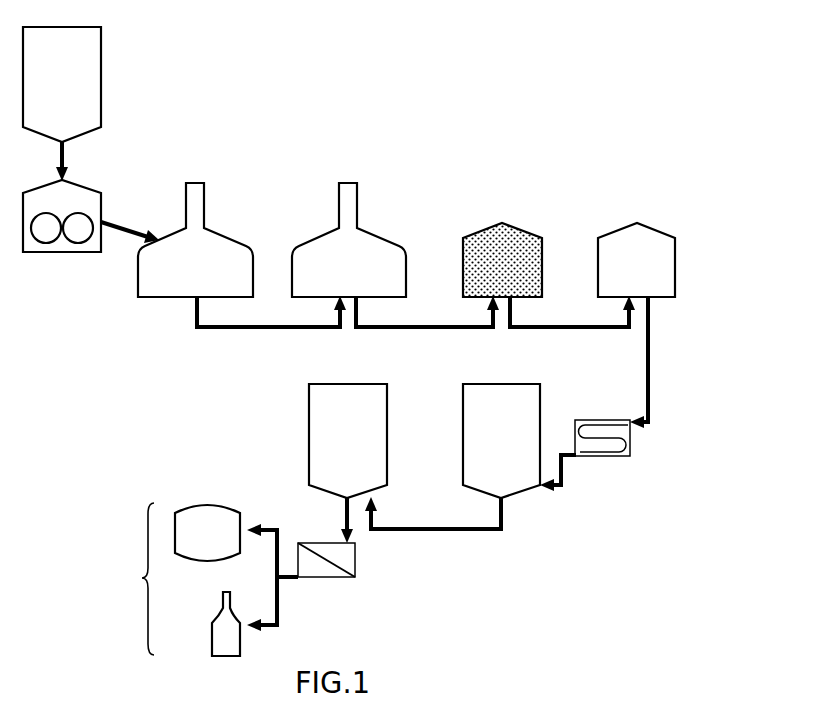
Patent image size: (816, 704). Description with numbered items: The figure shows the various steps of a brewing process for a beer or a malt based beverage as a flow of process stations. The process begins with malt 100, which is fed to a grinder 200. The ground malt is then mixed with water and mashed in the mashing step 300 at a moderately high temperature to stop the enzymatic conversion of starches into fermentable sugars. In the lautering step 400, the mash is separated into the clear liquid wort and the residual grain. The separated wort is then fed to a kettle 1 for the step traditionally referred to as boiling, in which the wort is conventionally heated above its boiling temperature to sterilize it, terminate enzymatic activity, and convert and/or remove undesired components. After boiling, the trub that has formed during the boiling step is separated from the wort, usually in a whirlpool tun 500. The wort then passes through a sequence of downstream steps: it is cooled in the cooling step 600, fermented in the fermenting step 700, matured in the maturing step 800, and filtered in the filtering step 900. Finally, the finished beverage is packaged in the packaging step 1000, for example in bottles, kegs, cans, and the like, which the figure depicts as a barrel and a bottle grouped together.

The malt 100 is at (98, 83).
The grinder 200 is at (82, 188).
The mashing 300 is at (214, 235).
The lautering 400 is at (370, 234).
The kettle 1 is at (520, 232).
The whirlpool tun 500 is at (650, 228).
The cooling 600 is at (631, 440).
The fermenting 700 is at (544, 396).
The maturing 800 is at (384, 409).
The filtering 900 is at (352, 572).
The packaging 1000 is at (142, 578).